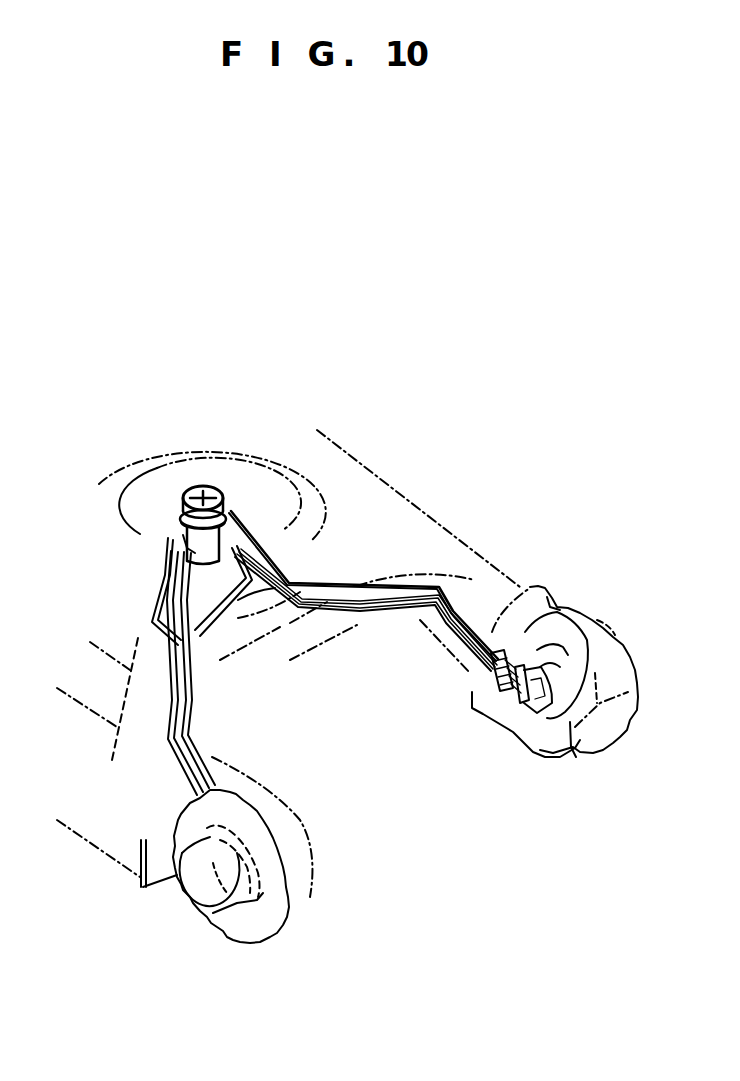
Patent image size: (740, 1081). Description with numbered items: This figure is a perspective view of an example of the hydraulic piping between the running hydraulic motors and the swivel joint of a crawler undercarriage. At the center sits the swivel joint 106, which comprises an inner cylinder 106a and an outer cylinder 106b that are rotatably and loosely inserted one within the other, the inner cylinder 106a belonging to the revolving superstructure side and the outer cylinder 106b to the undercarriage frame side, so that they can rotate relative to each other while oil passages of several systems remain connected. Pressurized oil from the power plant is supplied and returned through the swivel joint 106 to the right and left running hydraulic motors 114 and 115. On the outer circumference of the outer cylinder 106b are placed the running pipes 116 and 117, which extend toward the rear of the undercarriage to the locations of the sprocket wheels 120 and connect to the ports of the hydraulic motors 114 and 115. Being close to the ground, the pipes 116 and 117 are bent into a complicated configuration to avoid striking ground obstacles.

The swivel joint 106 is at (203, 486).
The inner cylinder 106a is at (182, 490).
The outer cylinder 106b is at (177, 531).
The running hydraulic motor 114 is at (176, 895).
The running hydraulic motor 115 is at (570, 750).
The running pipe 116 is at (197, 700).
The running pipe 117 is at (357, 625).
The sprocket wheel 120 is at (240, 947).